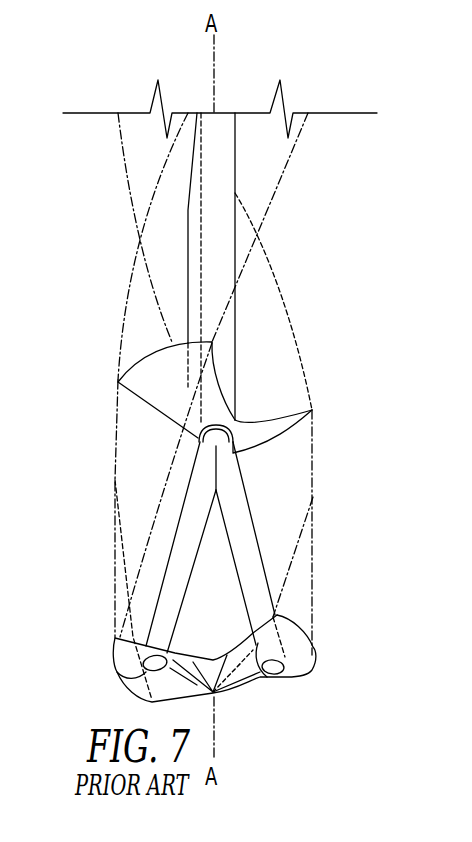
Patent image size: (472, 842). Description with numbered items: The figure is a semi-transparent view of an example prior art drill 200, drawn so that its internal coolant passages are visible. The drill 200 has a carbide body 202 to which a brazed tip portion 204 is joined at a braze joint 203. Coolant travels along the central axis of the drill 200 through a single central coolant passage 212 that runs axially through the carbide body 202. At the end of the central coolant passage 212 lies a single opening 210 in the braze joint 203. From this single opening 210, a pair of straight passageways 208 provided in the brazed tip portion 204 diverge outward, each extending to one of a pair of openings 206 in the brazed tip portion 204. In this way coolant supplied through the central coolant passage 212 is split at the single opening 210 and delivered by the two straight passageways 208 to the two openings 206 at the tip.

The prior art drill 200 is at (160, 59).
The carbide body 202 is at (172, 190).
The braze joint 203 is at (303, 424).
The brazed tip portion 204 is at (133, 490).
The openings 206 is at (118, 672).
The straight passageways 208 is at (252, 548).
The single opening 210 is at (199, 439).
The central coolant passage 212 is at (245, 172).